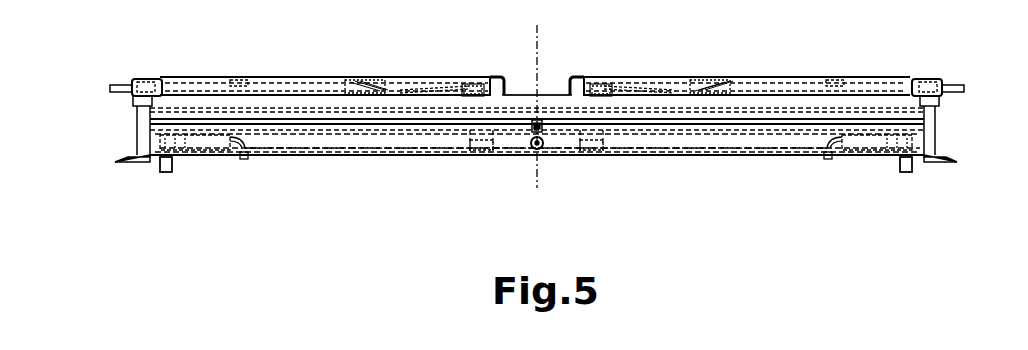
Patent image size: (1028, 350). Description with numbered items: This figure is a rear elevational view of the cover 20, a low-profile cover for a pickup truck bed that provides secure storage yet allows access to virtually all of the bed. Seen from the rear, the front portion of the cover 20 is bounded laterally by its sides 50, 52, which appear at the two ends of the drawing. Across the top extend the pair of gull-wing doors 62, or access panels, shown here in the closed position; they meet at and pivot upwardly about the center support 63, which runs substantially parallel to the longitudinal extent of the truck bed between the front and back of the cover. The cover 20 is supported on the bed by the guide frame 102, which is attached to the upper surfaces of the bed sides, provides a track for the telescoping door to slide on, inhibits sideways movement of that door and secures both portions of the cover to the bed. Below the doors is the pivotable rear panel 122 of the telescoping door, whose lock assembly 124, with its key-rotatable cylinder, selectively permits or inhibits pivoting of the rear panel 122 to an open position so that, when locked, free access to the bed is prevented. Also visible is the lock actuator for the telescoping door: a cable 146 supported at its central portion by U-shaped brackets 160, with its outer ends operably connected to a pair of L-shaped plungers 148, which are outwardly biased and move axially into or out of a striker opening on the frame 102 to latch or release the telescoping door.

The cover 20 is at (580, 62).
The side 50 is at (137, 108).
The side 52 is at (946, 131).
The gull-wing door 62 is at (273, 78).
The center support 63 is at (523, 95).
The guide frame 102 is at (153, 163).
The rear panel 122 is at (760, 138).
The lock assembly 124 is at (530, 150).
The cable 146 is at (393, 157).
The L-shaped plunger 148 is at (217, 160).
The U-shaped bracket 160 is at (485, 157).